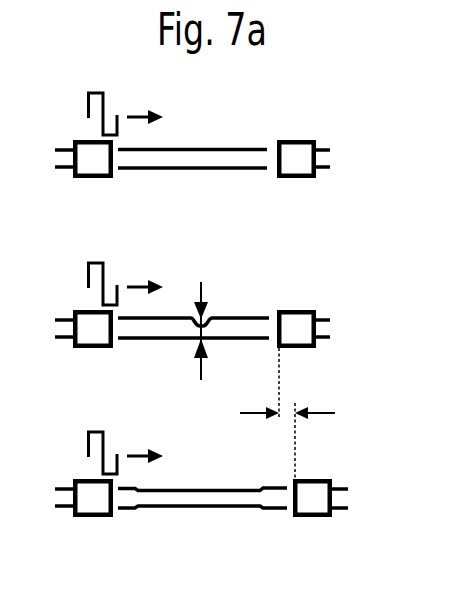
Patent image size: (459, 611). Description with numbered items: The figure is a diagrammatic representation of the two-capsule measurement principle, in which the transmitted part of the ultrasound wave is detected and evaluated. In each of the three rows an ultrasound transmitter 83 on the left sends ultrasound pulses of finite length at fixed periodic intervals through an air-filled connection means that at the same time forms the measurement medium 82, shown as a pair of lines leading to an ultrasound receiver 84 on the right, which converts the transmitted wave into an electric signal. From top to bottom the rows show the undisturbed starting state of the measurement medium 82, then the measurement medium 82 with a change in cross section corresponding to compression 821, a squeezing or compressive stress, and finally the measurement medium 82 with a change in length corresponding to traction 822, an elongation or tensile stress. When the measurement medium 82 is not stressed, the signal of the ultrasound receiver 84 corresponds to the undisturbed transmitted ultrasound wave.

The measurement medium 82 is at (156, 169).
The ultrasound transmitter 83 is at (73, 176).
The ultrasound receiver 84 is at (291, 140).
The compression 821 is at (238, 315).
The traction 822 is at (268, 414).